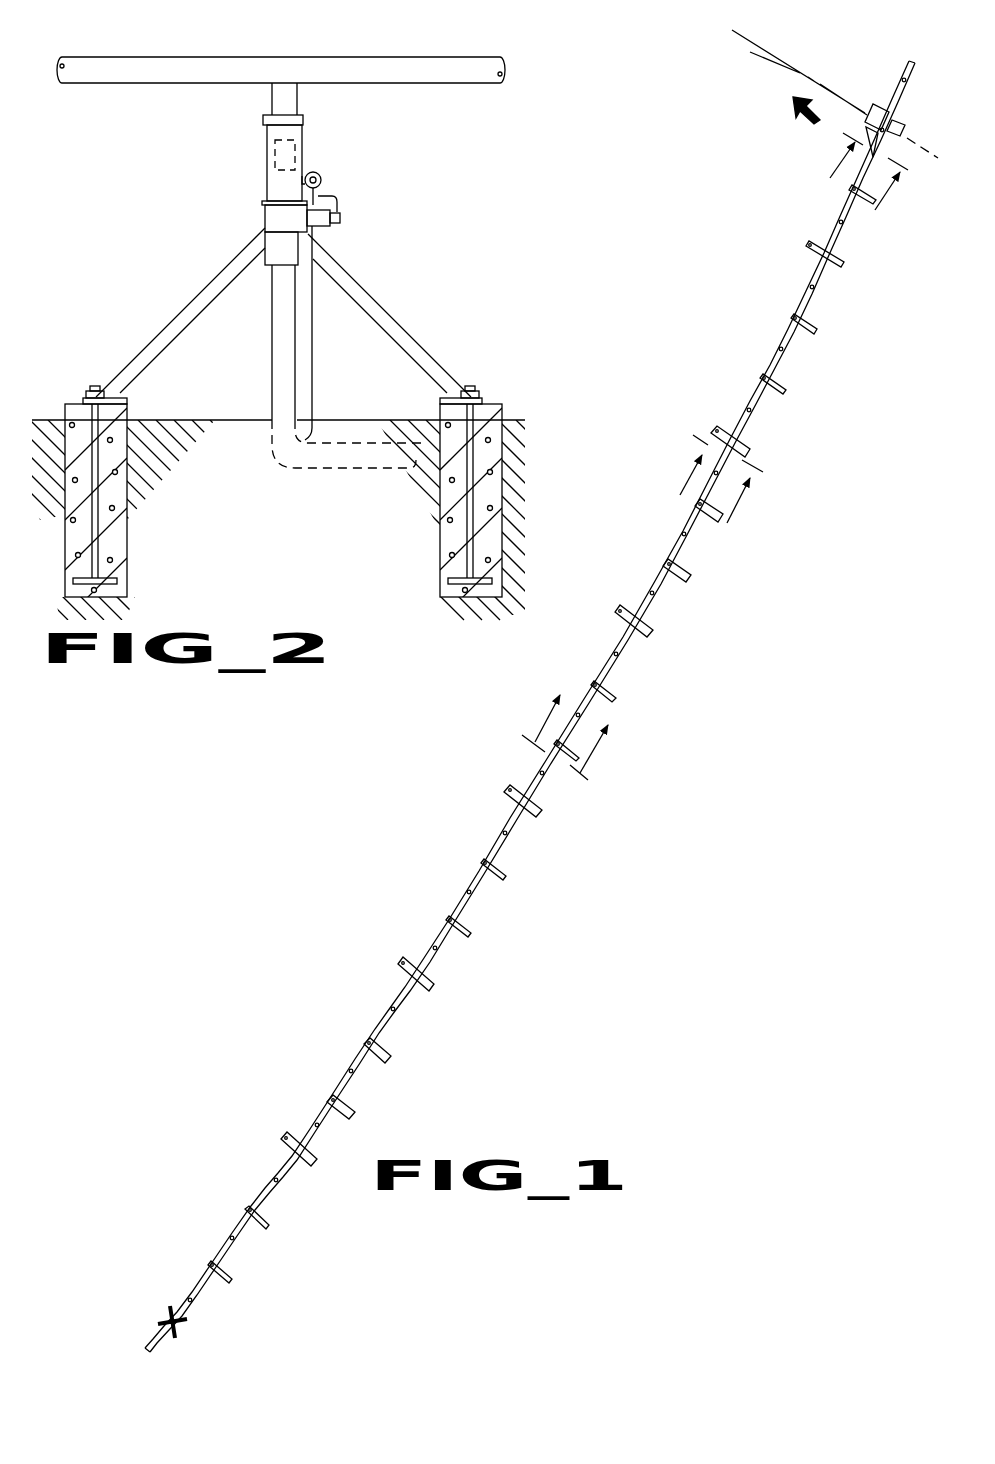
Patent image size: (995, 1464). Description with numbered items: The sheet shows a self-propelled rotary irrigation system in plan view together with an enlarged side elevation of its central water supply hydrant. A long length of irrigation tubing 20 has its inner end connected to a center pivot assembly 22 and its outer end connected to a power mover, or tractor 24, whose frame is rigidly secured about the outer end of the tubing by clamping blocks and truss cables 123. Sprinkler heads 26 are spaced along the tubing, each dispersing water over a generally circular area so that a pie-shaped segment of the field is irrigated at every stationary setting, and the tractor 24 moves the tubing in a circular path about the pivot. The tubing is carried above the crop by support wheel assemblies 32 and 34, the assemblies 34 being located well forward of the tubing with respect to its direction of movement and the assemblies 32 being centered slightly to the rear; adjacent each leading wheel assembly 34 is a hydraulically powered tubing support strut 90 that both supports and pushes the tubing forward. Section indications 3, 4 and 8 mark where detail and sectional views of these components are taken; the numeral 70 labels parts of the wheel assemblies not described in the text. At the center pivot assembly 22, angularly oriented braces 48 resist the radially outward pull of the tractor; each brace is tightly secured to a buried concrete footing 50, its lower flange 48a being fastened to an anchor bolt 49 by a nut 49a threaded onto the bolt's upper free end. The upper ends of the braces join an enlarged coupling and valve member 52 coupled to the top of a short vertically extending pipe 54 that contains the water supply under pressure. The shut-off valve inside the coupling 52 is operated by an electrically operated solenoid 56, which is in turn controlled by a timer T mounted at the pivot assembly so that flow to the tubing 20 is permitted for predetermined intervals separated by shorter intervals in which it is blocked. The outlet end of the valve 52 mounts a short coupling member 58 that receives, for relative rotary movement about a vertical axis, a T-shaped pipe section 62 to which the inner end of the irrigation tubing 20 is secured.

In FIG. 2, the irrigation tubing 20 is at (73, 60).
In FIG. 1, the irrigation tubing 20 is at (625, 653).
In FIG. 2, the center pivot assembly 22 is at (370, 178).
In FIG. 1, the center pivot assembly 22 is at (192, 1327).
In FIG. 1, the power mover, or tractor 24 is at (860, 122).
In FIG. 1, the sprinkler heads 26 is at (782, 342).
In FIG. 1, the support wheel assemblies 32 is at (692, 508).
In FIG. 1, the support wheel assemblies 34 is at (722, 430).
In FIG. 2, the braces 48 is at (237, 268).
In FIG. 2, the flanges 48a is at (130, 390).
In FIG. 2, the anchor bolt 49 is at (97, 522).
In FIG. 2, the nut 49a is at (92, 392).
In FIG. 2, the concrete footing 50 is at (118, 538).
In FIG. 2, the coupling and valve member 52 is at (265, 218).
In FIG. 2, the vertically extending pipe 54 is at (272, 318).
In FIG. 2, the solenoid 56 is at (340, 218).
In FIG. 2, the coupling member 58 is at (268, 142).
In FIG. 2, the T-shaped pipe section 62 is at (272, 100).
In FIG. 1, the coupler sleeve 70 is at (722, 548).
In FIG. 1, the tubing support struts 90 is at (750, 447).
In FIG. 1, the truss cables 123 is at (892, 108).
In FIG. 1, the section line 3- 3 is at (568, 739).
In FIG. 1, the section line 4- 4 is at (713, 479).
In FIG. 1, the section line 8- 8 is at (858, 191).
In FIG. 2, the timer T is at (320, 173).